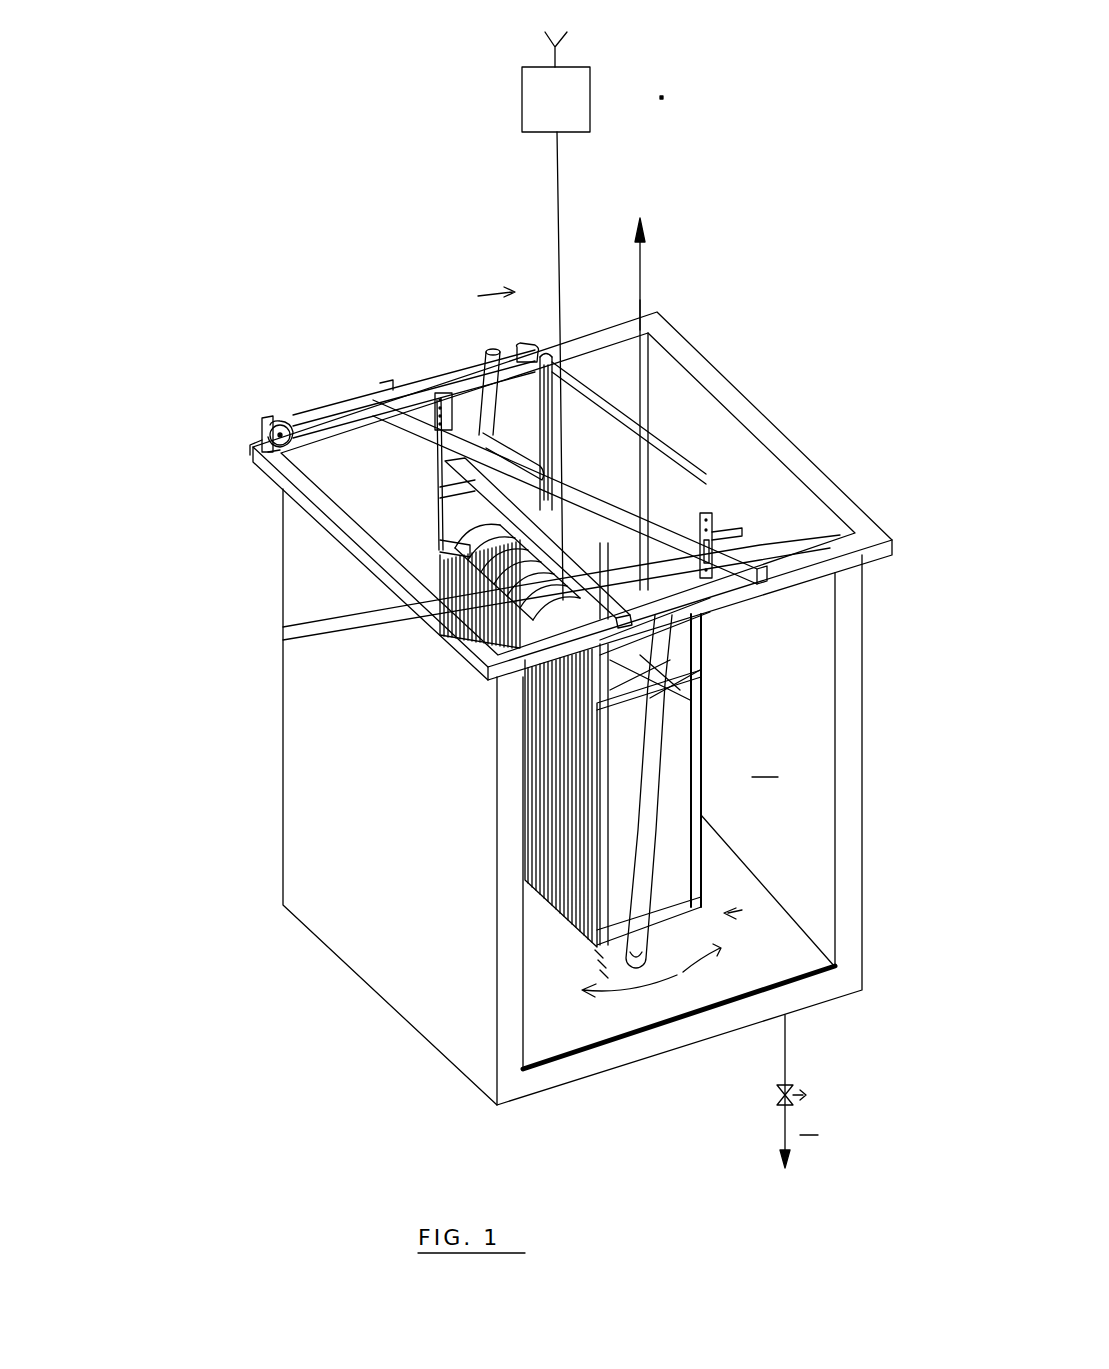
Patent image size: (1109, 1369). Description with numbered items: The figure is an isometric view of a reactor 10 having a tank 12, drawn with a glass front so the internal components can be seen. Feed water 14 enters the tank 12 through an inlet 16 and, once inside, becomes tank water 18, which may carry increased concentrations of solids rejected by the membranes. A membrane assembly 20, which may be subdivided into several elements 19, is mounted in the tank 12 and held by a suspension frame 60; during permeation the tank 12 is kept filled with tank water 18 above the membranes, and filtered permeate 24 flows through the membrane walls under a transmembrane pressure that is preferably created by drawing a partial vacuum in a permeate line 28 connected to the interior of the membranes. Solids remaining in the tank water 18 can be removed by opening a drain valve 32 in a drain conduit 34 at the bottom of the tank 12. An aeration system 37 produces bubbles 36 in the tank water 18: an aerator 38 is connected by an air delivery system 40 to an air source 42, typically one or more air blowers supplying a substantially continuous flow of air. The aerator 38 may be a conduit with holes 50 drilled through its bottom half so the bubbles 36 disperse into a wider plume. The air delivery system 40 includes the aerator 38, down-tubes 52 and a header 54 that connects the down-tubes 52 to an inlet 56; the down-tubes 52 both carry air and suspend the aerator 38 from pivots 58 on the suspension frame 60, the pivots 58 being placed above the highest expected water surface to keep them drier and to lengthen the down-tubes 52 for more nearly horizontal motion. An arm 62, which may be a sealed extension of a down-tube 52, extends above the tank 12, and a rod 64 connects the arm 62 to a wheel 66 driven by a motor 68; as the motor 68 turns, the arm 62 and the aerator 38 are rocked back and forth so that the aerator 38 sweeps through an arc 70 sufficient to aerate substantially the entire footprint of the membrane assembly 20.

The reactor 10 is at (262, 1056).
The tank 12 is at (862, 826).
The feed water 14 is at (362, 470).
The inlet 16 is at (370, 390).
The tank water 18 is at (766, 763).
The elements 19 is at (445, 598).
The membrane assembly 20 is at (760, 689).
The permeate 24 is at (634, 387).
The permeate line 28 is at (642, 300).
The drain valve 32 is at (806, 1094).
The drain conduit 34 is at (815, 1145).
The bubbles 36 is at (597, 957).
The aeration system 37 is at (607, 602).
The aerator 38 is at (603, 970).
The air delivery system 40 is at (558, 262).
The air source 42 is at (593, 104).
The holes 50 is at (600, 963).
The down-tubes 52 is at (660, 740).
The header 54 is at (590, 462).
The inlet 56 is at (600, 470).
The pivots 58 is at (444, 395).
The suspension frame 60 is at (752, 560).
The arm 62 is at (490, 350).
The rod 64 is at (302, 388).
The wheel 66 is at (262, 420).
The motor 68 is at (262, 422).
The arc 70 is at (673, 975).